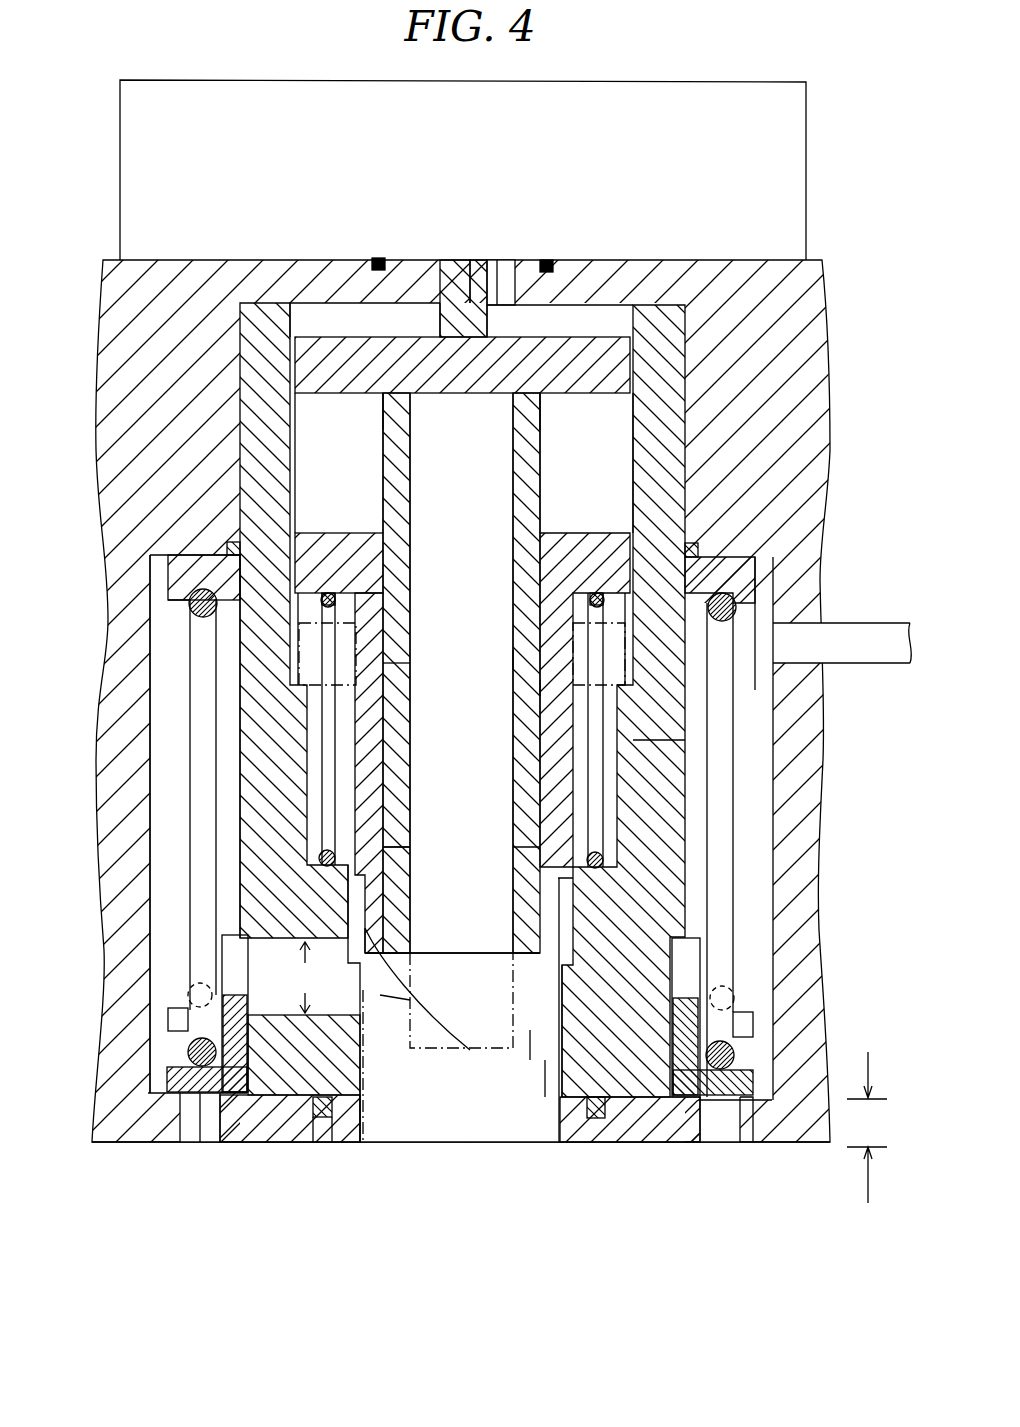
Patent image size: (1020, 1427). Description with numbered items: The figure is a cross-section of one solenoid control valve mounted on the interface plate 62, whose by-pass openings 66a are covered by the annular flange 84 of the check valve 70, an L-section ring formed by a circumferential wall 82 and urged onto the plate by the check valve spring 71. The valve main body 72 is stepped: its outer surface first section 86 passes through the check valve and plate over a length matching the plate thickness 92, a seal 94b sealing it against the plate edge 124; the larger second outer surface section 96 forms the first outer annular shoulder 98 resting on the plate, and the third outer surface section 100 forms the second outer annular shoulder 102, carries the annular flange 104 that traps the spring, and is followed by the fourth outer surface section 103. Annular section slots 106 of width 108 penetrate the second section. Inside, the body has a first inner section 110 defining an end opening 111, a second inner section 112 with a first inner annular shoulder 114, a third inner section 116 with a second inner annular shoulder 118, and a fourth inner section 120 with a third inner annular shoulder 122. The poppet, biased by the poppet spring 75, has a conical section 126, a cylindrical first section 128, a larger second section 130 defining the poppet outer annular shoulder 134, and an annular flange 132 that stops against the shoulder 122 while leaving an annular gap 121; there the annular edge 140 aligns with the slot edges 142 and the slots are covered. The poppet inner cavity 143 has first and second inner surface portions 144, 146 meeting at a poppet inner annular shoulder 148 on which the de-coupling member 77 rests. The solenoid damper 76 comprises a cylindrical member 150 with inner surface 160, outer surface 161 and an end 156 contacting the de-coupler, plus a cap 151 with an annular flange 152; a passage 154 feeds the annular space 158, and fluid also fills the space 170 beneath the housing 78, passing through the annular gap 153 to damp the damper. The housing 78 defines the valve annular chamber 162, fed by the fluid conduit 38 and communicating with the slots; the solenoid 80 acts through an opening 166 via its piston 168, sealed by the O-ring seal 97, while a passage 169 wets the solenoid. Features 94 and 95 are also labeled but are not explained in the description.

The fluid conduit 38 is at (840, 632).
The interface plate 62 is at (128, 1140).
The by-pass openings 66a is at (207, 1110).
The check valve 70 is at (167, 1075).
The check valve spring 71 is at (195, 612).
The main body 72 is at (750, 1147).
The poppet spring 75 is at (598, 780).
The solenoid damper 76 is at (612, 368).
The de-coupling member 77 is at (405, 800).
The housing 78 is at (826, 286).
The solenoid 80 is at (775, 192).
The annular circumferential wall 82 is at (237, 1045).
The annular flange 84 is at (195, 1100).
The outer surface first section 86 is at (583, 1138).
The thickness 92 is at (868, 1203).
The seal 94 is at (632, 537).
The seal 94b is at (440, 1060).
The wall 95 is at (385, 1105).
The second outer surface section 96 is at (705, 1000).
The seal 97 is at (378, 258).
The first outer annular shoulder 98 is at (345, 1030).
The third outer surface section 100 is at (683, 740).
The second outer annular shoulder 102 is at (253, 945).
The fourth outer surface section 103 is at (243, 345).
The annular flange 104 is at (723, 577).
The annular section slots 106 is at (257, 962).
The width 108 is at (305, 977).
The first inner section 110 is at (545, 1060).
The end opening 111 is at (455, 1050).
The second inner section 112 is at (573, 893).
The first inner annular shoulder 114 is at (722, 985).
The body inner surface third section 116 is at (303, 813).
The second inner annular shoulder 118 is at (623, 853).
The fourth body inner surface section 120 is at (290, 672).
The annular gap 121 is at (707, 450).
The third inner annular shoulder 122 is at (630, 657).
The interface plate edge 124 is at (330, 1110).
The conical outer surface section 126 is at (530, 1030).
The cylindrical outer surface first section 128 is at (560, 915).
The cylindrical outer surface second section 130 is at (570, 800).
The annular flange 132 is at (607, 547).
The poppet outer annular shoulder 134 is at (243, 915).
The annular edge 140 is at (380, 995).
The annular section edges 142 is at (365, 928).
The inner cavity 143 is at (461, 720).
The first inner surface portion 144 is at (512, 932).
The second inner surface portion 146 is at (540, 688).
The poppet inner annular shoulder 148 is at (520, 847).
The cylindrical member 150 is at (522, 410).
The cap 151 is at (520, 345).
The annular flange 152 is at (518, 362).
The annular gap 153 is at (630, 297).
The passage 154 is at (405, 410).
The end 156 is at (518, 660).
The annular space 158 is at (464, 463).
The inner surface 160 is at (410, 640).
The outer surface 161 is at (395, 398).
The valve annular chamber 162 is at (177, 736).
The opening 166 is at (433, 290).
The solenoid piston 168 is at (462, 312).
The passage 169 is at (513, 300).
The space 170 is at (338, 317).